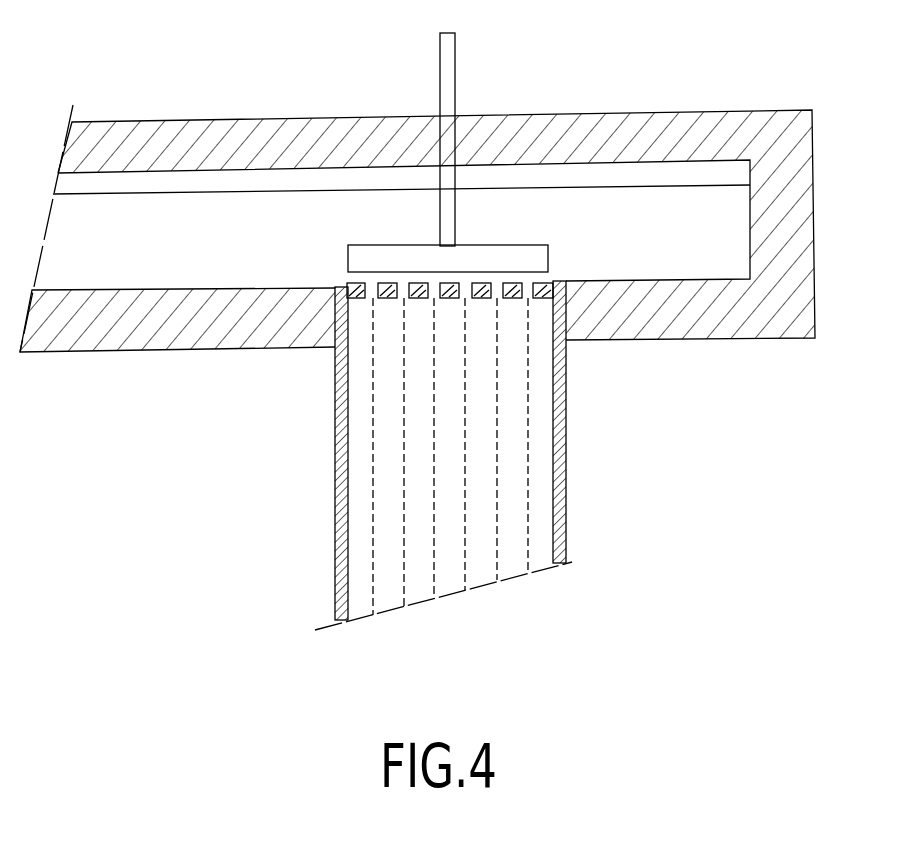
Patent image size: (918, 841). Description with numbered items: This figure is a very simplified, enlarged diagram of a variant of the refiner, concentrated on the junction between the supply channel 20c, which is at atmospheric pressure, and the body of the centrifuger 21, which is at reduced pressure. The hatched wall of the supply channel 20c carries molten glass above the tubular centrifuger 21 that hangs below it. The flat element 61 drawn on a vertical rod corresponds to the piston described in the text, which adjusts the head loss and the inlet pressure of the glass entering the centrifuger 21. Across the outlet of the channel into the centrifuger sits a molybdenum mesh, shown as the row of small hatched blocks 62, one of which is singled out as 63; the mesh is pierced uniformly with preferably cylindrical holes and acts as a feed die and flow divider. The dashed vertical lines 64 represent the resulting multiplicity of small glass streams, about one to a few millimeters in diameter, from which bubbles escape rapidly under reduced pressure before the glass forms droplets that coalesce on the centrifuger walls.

The supply channel 20c is at (167, 130).
The centrifuger 21 is at (337, 465).
The plate 61 is at (548, 249).
The support ring 62 is at (345, 284).
The support ring 63 is at (483, 297).
The capillary tubes 64 is at (467, 557).